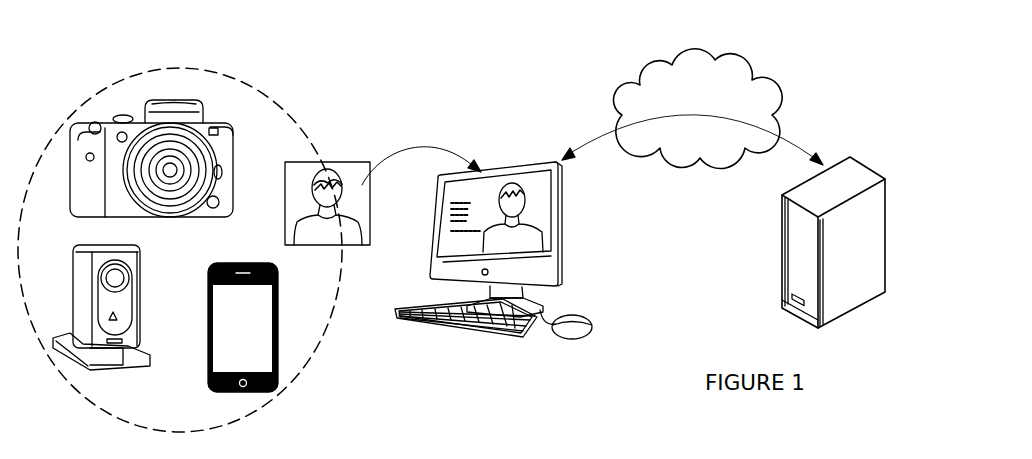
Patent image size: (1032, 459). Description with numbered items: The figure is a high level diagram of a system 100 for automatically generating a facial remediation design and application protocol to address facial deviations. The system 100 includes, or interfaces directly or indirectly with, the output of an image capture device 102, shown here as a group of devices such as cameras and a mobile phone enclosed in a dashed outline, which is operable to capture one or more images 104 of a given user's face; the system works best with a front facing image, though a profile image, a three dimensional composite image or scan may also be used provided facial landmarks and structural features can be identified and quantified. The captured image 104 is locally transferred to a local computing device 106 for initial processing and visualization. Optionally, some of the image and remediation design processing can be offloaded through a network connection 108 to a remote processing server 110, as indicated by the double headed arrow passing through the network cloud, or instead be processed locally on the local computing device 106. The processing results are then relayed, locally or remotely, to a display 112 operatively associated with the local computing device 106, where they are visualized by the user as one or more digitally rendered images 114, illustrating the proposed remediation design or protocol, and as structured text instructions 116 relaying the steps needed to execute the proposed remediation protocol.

The system 100 is at (392, 62).
The image capture device 102 is at (306, 365).
The image 104 is at (348, 162).
The local computing device 106 is at (558, 275).
The network connection 108 is at (725, 55).
The remote processing server 110 is at (833, 320).
The display 112 is at (548, 183).
The digitally rendered images 114 is at (520, 210).
The structured text instructions 116 is at (452, 235).